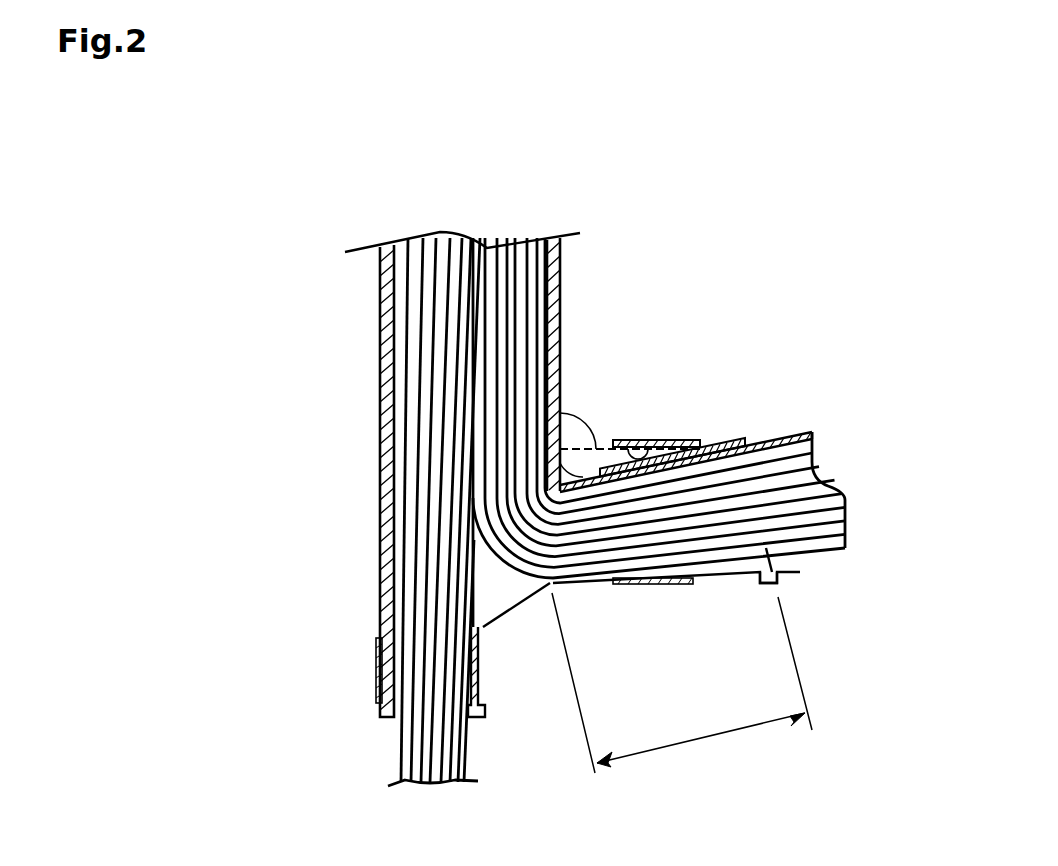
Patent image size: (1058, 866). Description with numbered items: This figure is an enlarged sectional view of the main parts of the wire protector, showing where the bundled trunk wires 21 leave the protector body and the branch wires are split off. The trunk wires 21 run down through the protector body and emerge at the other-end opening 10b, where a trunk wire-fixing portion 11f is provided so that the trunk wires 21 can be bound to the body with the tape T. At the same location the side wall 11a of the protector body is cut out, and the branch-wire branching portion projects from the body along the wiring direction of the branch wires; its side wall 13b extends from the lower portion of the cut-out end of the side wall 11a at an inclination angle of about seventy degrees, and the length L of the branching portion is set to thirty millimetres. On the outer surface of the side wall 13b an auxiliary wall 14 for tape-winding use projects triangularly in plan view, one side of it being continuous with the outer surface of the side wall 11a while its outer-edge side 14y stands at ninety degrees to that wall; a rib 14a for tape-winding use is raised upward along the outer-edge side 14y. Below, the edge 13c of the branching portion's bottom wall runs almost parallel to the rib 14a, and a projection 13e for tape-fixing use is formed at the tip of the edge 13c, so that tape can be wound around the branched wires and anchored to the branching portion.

The side wall 11a is at (562, 262).
The trunk wire-fixing portion 11f is at (385, 600).
The trunk wires 21 is at (400, 752).
The other-end opening 10b is at (453, 628).
The side wall 13b is at (818, 433).
The edge 13c is at (742, 574).
The projection for tape-fixing use 13e is at (800, 572).
The auxiliary wall for tape-winding use 14 is at (660, 442).
The rib for tape-winding use 14a is at (724, 450).
The outer-edge side 14y is at (657, 438).
The tape T is at (378, 668).
The length of the branch-wire branching portion L is at (682, 687).